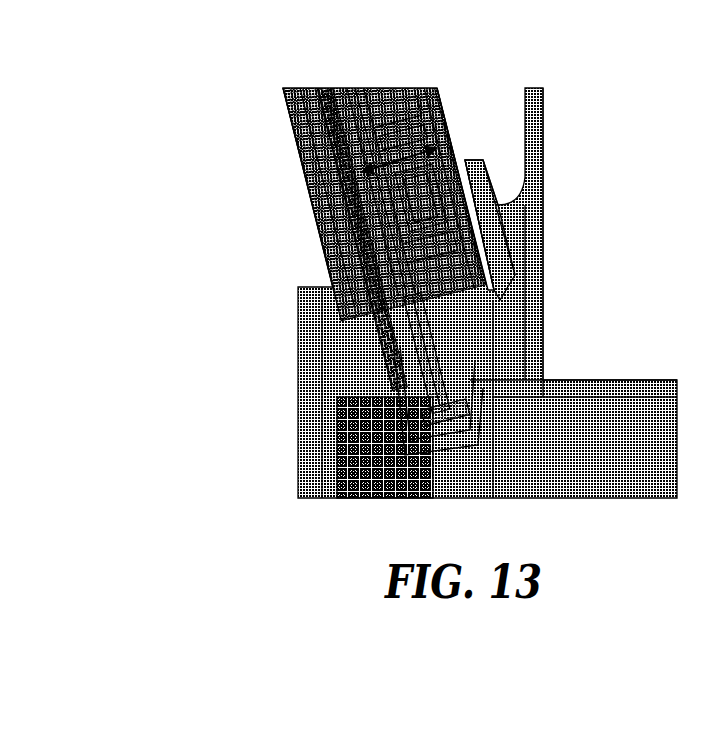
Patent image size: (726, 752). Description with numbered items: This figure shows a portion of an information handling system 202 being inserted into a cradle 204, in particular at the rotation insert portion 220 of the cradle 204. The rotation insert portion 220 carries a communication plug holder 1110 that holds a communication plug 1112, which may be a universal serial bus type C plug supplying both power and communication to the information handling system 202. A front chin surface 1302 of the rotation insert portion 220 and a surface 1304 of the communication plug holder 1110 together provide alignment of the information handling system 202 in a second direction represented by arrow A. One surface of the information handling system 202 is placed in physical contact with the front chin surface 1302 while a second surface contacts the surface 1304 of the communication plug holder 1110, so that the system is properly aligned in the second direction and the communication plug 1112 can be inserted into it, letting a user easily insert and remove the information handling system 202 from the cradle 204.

The information handling system 202 is at (318, 190).
The cradle 204 is at (585, 184).
The rotation insert portion 220 is at (387, 377).
The communication plug holder 1110 is at (510, 315).
The communication plug 1112 is at (430, 370).
The front chin surface 1302 is at (370, 335).
The surface 1304 is at (495, 282).
The arrow A is at (407, 150).